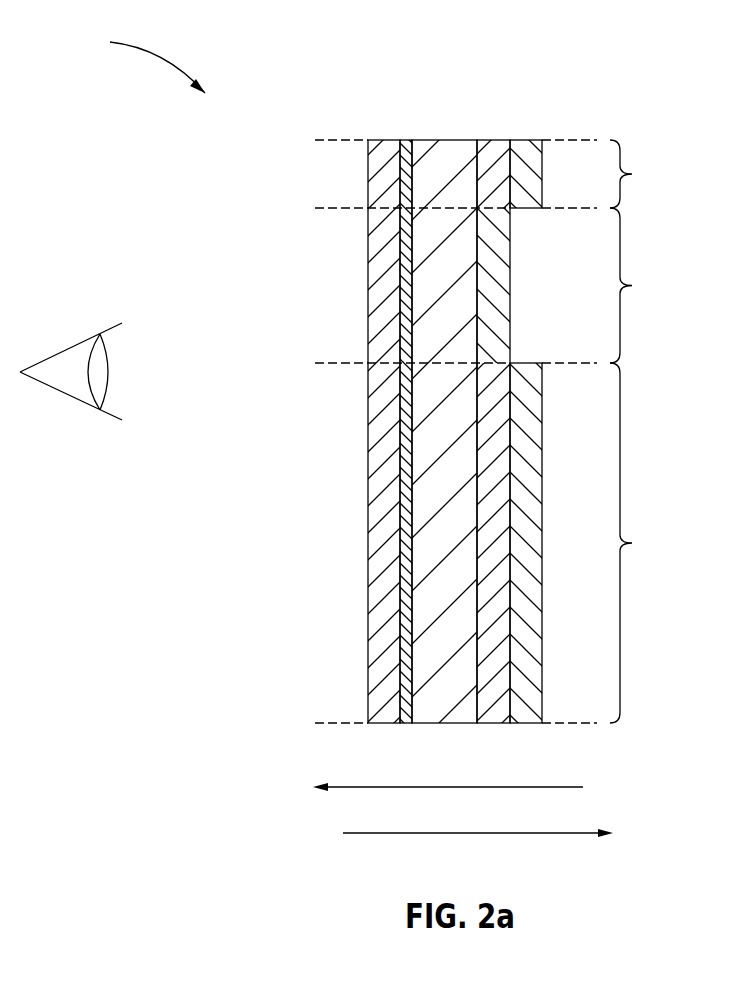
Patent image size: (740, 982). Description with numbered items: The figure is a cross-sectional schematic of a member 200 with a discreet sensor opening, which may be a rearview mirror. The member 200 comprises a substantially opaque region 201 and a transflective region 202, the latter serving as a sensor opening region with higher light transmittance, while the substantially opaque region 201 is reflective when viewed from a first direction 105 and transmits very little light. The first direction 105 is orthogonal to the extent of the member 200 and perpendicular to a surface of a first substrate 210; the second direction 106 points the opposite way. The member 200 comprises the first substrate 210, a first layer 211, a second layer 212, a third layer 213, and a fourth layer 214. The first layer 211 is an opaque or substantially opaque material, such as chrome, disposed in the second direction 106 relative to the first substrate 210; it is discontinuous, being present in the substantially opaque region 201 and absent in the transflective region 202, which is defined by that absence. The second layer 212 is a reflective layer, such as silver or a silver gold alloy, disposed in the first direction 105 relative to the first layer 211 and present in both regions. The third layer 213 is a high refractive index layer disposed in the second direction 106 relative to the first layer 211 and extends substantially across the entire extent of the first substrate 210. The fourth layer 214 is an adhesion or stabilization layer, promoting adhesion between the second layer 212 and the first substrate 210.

The member 200 is at (138, 60).
The substantially opaque region 201 is at (593, 431).
The transflective region 202 is at (643, 285).
The first substrate 210 is at (455, 147).
The first layer 211 is at (495, 150).
The second layer 212 is at (388, 158).
The third layer 213 is at (488, 278).
The fourth layer 214 is at (405, 158).
The first direction 105 is at (468, 789).
The second direction 106 is at (458, 834).